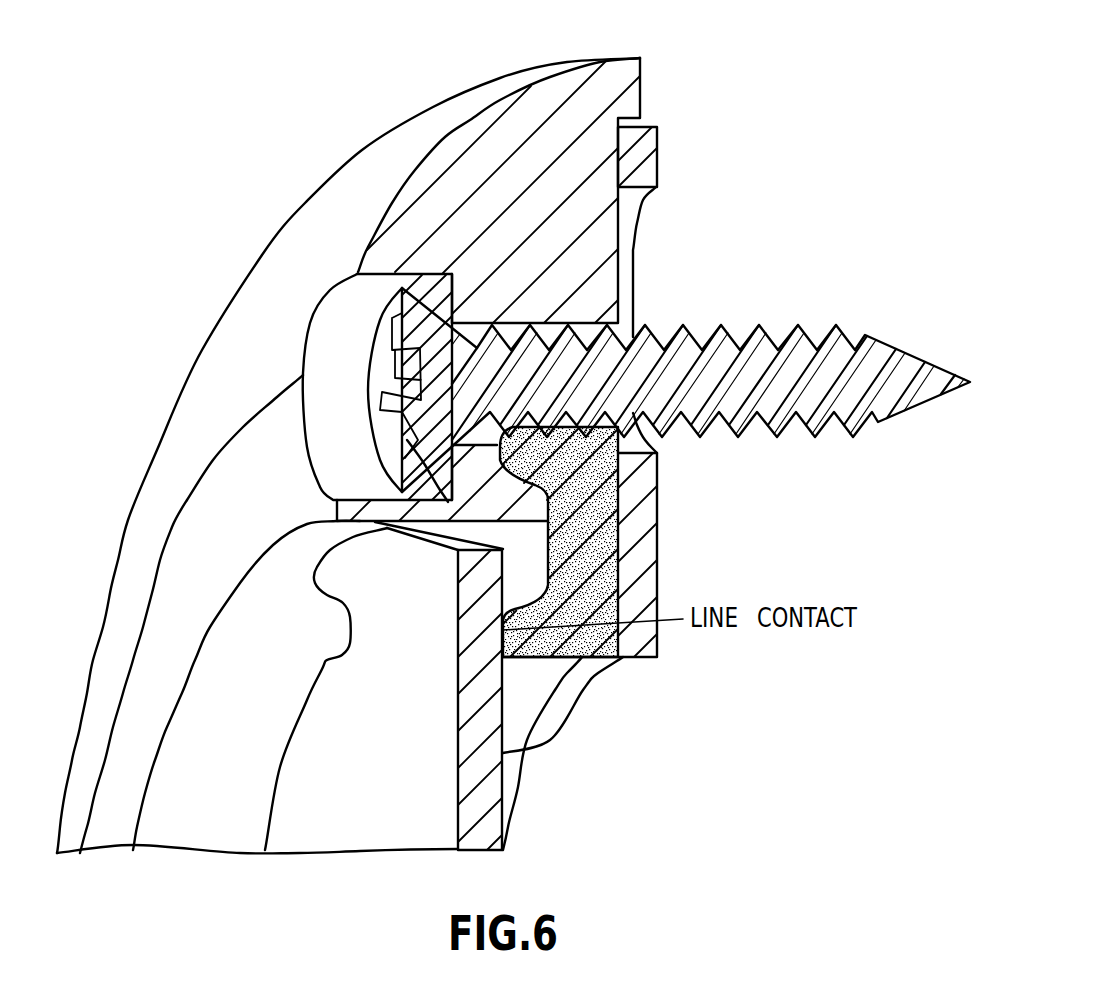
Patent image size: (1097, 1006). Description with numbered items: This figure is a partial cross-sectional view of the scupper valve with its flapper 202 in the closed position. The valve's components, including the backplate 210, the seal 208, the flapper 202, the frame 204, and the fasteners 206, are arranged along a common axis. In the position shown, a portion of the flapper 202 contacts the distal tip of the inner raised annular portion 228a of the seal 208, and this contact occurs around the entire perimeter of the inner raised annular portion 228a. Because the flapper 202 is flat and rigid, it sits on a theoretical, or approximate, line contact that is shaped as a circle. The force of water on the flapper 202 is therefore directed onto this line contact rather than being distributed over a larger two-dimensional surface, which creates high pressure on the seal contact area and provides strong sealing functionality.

The frame 204 is at (273, 257).
The fastener 206 is at (845, 340).
The backplate 210 is at (657, 157).
The seal 208 is at (653, 480).
The flapper 202 is at (485, 785).
The inner raised annular portion 228a is at (567, 667).